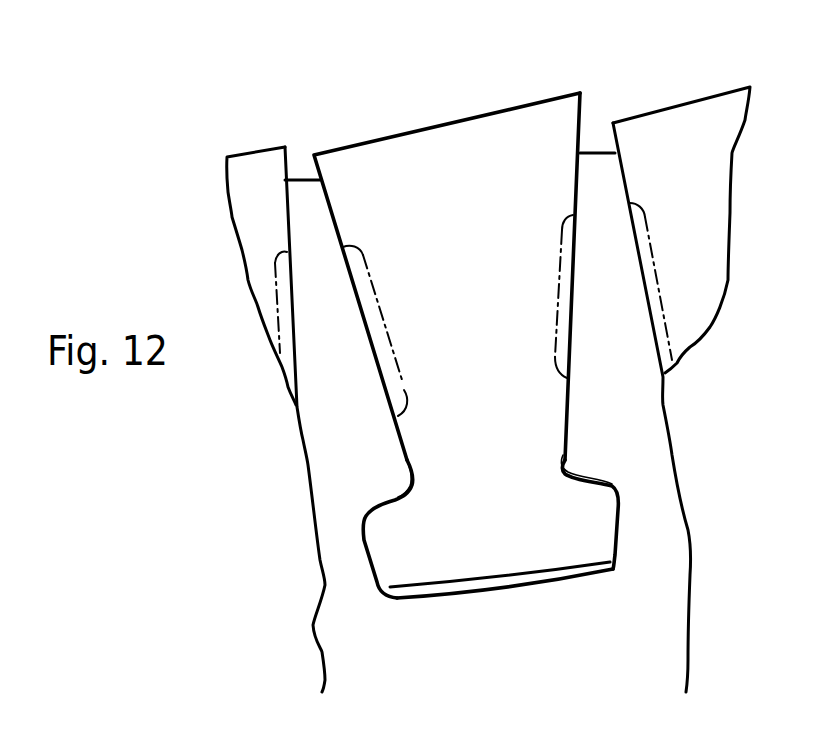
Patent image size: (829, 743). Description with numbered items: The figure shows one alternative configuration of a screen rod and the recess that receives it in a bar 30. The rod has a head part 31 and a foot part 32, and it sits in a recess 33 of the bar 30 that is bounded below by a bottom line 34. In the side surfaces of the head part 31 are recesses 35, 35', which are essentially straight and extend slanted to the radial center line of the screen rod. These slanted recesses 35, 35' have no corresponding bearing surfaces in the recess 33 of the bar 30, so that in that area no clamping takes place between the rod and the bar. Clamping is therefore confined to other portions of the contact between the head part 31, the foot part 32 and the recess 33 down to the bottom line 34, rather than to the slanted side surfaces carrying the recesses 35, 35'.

The bar 30 is at (487, 130).
The head part 31 is at (555, 403).
The foot part 32 is at (617, 567).
The recess 33 is at (472, 585).
The bottom line 34 is at (437, 592).
The recess 35 is at (341, 331).
The recess 35' is at (613, 290).